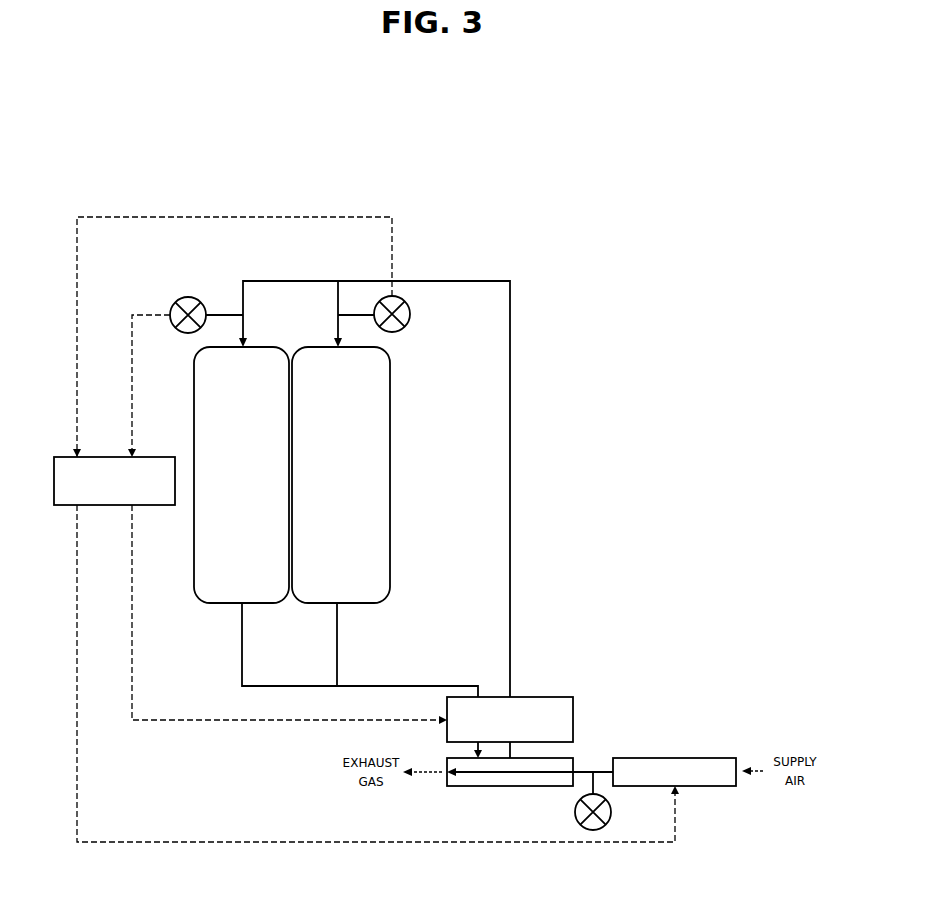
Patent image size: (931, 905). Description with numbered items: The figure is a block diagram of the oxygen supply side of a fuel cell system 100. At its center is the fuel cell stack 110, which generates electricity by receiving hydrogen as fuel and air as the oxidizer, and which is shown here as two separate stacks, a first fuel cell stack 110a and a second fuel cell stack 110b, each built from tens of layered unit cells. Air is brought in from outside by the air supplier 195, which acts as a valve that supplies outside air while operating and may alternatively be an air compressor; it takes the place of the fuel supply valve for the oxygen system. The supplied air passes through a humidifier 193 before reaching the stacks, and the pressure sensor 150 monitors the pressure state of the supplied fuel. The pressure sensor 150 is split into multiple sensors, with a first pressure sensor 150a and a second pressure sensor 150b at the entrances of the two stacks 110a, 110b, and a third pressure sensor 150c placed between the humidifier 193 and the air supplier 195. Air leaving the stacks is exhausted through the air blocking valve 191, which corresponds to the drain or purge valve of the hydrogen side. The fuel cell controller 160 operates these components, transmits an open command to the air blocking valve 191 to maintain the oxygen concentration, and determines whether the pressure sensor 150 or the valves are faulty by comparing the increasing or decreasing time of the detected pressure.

The fuel cell system 100 is at (197, 116).
The fuel cell stack 110 is at (318, 311).
The fuel cell stack 110a is at (265, 347).
The fuel cell stack 110b is at (313, 347).
The pressure sensor 150 is at (373, 173).
The pressure sensor 150a is at (188, 297).
The pressure sensor 150b is at (380, 297).
The pressure sensor 150c is at (612, 808).
The fuel cell controller 160 is at (155, 457).
The air blocking valve 191 is at (553, 697).
The humidifier 193 is at (555, 786).
The air supplier 195 is at (715, 758).